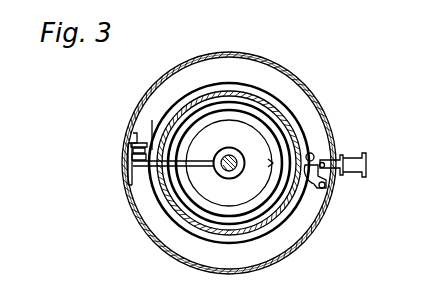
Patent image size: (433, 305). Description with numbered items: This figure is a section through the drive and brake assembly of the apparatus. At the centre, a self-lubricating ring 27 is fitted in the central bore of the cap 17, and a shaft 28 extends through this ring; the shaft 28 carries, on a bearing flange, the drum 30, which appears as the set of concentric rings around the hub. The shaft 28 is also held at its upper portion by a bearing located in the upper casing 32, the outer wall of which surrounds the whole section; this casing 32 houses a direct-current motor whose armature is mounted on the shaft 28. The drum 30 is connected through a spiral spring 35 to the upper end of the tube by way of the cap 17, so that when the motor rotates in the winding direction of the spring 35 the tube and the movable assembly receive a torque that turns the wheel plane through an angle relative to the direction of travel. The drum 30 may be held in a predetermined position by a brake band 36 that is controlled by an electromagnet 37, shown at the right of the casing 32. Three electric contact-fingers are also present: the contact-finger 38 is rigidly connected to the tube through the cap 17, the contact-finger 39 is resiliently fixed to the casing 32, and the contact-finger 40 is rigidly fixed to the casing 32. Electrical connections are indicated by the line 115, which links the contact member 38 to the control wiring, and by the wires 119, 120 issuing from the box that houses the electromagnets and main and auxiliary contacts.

The cap 17 is at (245, 195).
The self-lubricating ring 27 is at (228, 149).
The shaft 28 is at (222, 170).
The drum 30 is at (251, 97).
The upper casing 32 is at (313, 95).
The spiral spring 35 is at (283, 137).
The brake band 36 is at (226, 82).
The electromagnet 37 is at (359, 153).
The electric contact-finger 38 is at (132, 179).
The electric contact-finger 39 is at (153, 133).
The electric contact-finger 40 is at (134, 143).
The line 115 is at (131, 168).
The wire 119 is at (124, 148).
The wire 120 is at (127, 143).